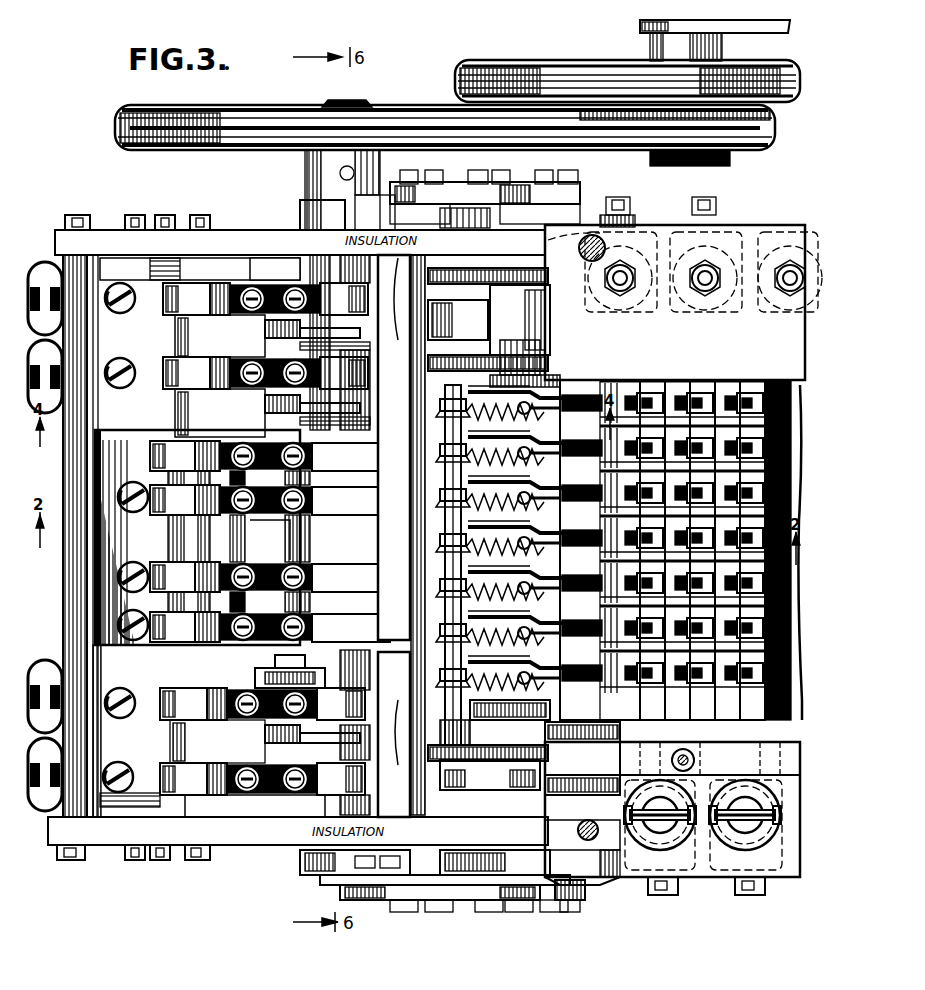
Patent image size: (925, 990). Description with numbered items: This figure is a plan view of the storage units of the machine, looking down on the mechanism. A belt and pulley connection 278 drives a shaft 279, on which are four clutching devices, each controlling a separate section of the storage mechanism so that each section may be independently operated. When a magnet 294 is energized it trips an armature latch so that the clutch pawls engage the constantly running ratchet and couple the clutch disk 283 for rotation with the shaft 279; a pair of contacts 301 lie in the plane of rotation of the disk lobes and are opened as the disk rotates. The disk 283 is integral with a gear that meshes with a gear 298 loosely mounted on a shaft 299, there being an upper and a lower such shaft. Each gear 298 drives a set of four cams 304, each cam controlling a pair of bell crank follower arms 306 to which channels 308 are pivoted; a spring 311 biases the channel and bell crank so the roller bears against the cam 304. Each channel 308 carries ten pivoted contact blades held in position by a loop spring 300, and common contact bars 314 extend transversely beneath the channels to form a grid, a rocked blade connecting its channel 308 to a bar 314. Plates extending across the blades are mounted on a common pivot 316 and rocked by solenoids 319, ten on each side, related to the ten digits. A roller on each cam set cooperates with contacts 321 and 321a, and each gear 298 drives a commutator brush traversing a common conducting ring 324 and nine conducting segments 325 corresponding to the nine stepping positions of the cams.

The belt and pulley connection 278 is at (423, 126).
The shaft 279 is at (355, 94).
The clutch disk 283 is at (212, 702).
The magnet 294 is at (43, 262).
The gear 298 is at (432, 292).
The shaft 299 is at (525, 362).
The loop spring 300 is at (724, 382).
The contacts 301 is at (350, 385).
The cam 304 is at (445, 432).
The bell crank follower arm 306 is at (548, 650).
The channel 308 is at (606, 722).
The spring 311 is at (445, 537).
The common contact bar 314 is at (656, 382).
The pivot 316 is at (707, 760).
The solenoid 319 is at (636, 300).
The contacts 321 is at (270, 538).
The contacts 321a is at (242, 537).
The common conducting ring 324 is at (598, 205).
The conducting segments 325 is at (560, 182).